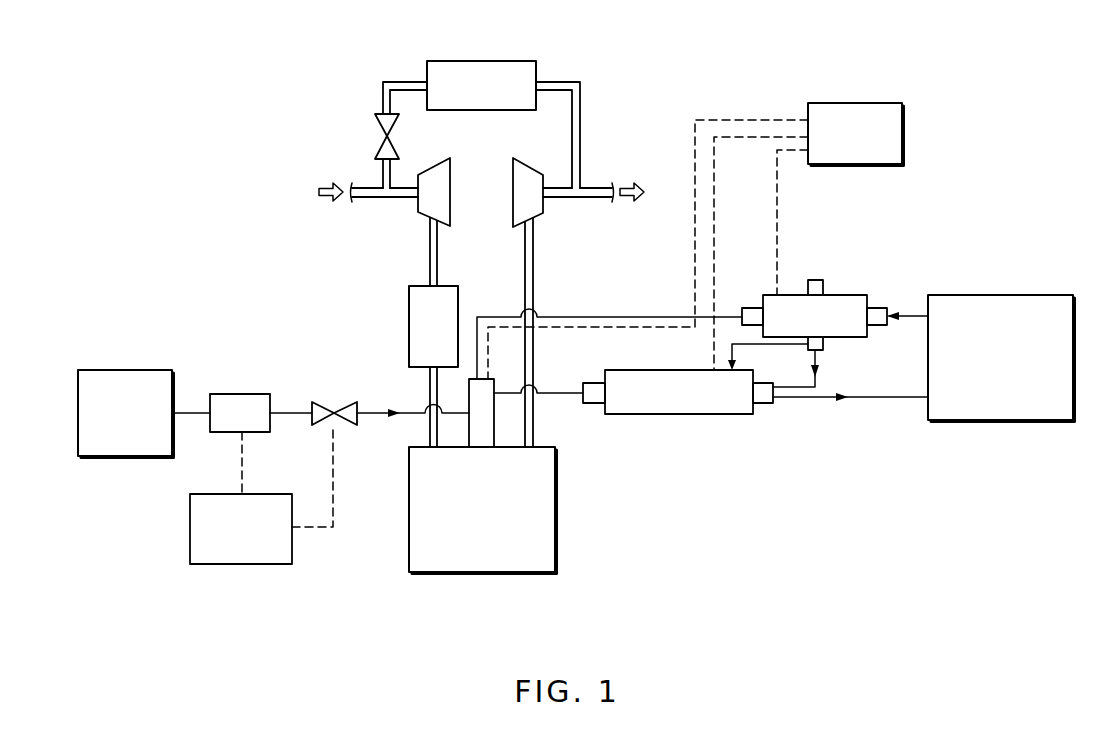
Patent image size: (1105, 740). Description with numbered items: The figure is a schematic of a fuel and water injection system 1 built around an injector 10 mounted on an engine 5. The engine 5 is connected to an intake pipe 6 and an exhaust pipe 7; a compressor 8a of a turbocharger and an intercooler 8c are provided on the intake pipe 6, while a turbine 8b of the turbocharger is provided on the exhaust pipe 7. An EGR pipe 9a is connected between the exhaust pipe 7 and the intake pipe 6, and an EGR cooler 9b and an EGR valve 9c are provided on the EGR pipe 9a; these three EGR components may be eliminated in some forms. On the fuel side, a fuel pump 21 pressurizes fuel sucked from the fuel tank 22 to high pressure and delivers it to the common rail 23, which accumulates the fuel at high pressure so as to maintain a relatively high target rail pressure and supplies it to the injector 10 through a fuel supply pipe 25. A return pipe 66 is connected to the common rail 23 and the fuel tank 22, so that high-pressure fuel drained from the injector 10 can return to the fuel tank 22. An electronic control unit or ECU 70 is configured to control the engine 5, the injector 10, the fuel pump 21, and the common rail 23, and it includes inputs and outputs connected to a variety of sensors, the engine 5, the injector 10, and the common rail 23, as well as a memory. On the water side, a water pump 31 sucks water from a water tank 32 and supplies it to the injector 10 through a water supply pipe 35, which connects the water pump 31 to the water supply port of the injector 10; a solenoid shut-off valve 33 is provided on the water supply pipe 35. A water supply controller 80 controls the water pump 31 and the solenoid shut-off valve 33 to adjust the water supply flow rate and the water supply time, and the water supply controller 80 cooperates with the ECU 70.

The fuel and water injection system 1 is at (326, 306).
The engine 5 is at (555, 504).
The intake pipe 6 is at (370, 198).
The exhaust pipe 7 is at (593, 198).
The compressor 8a is at (434, 168).
The turbine 8b is at (521, 164).
The intercooler 8c is at (409, 328).
The EGR pipe 9a is at (580, 128).
The EGR cooler 9b is at (505, 61).
The EGR valve 9c is at (375, 145).
The injector 10 is at (494, 418).
The fuel pump 21 is at (853, 295).
The fuel tank 22 is at (1044, 295).
The common rail 23 is at (676, 414).
The fuel supply pipe 25 is at (559, 393).
The water pump 31 is at (252, 394).
The water tank 32 is at (143, 370).
The solenoid shut-off valve 33 is at (330, 402).
The water supply pipe 35 is at (376, 413).
The return pipe 66 is at (631, 317).
The electronic control unit (ECU) 70 is at (881, 103).
The water supply controller 80 is at (241, 564).